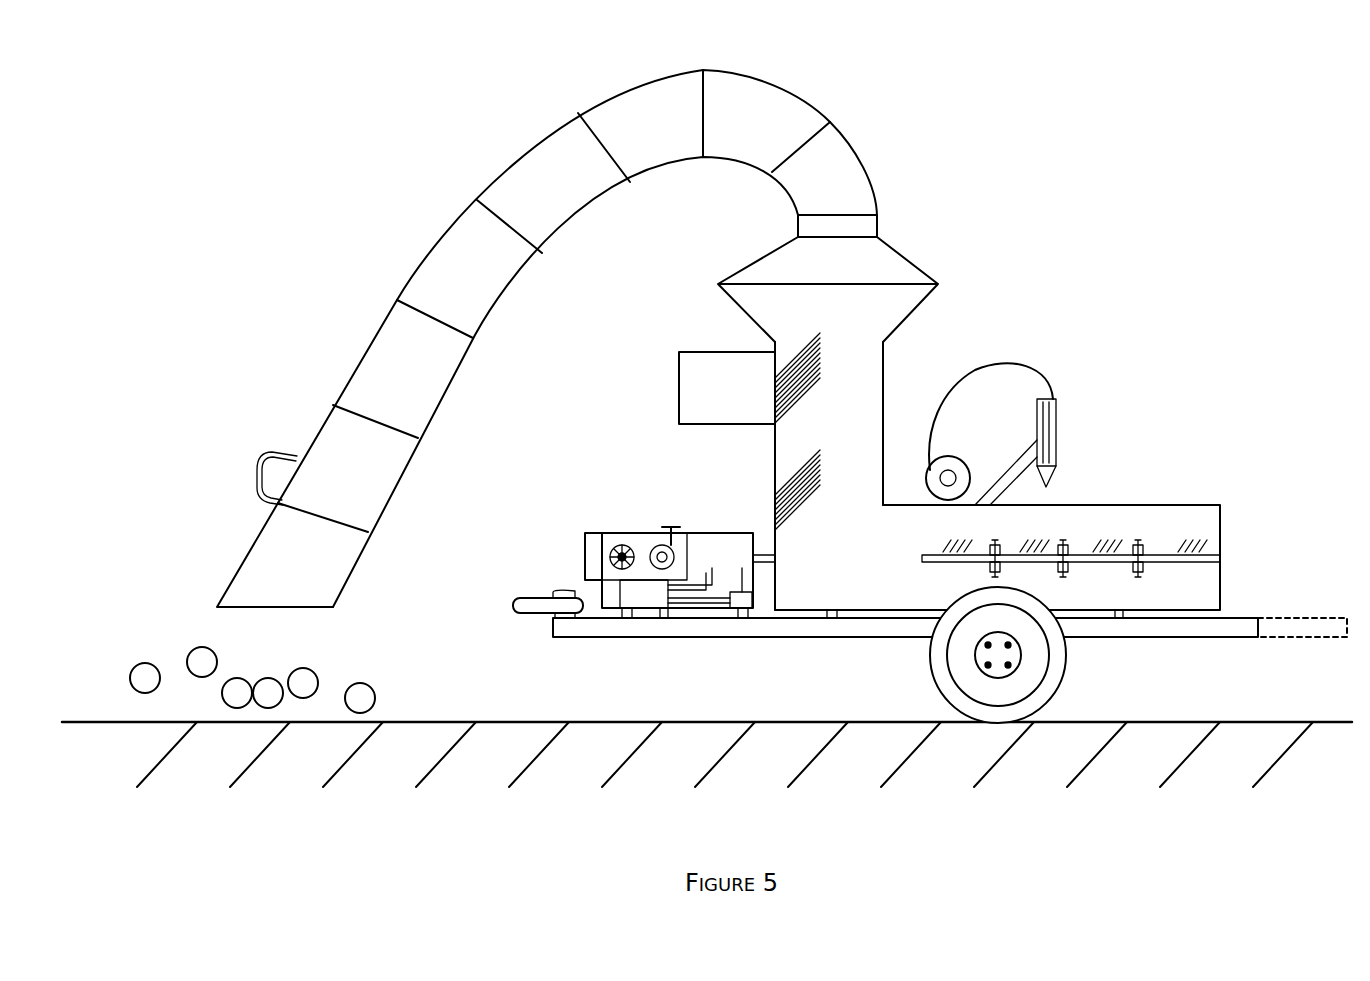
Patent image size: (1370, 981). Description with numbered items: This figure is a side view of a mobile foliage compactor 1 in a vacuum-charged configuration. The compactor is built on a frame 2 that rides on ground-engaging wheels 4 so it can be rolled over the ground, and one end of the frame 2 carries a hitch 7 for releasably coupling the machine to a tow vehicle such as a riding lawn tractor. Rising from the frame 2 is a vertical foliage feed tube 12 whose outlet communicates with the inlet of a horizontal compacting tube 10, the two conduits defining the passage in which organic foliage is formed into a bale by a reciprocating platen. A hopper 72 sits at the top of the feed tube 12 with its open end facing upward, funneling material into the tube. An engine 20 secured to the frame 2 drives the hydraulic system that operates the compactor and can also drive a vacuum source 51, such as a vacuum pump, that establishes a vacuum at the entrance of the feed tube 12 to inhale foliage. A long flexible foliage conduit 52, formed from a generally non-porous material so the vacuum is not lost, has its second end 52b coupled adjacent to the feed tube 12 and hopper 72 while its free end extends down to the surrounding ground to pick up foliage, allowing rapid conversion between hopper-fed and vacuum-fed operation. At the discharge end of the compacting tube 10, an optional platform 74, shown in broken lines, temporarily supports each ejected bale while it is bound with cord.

The foliage compactor 1 is at (899, 459).
The frame 2 is at (1247, 624).
The ground-engaging wheels 4 is at (1032, 677).
The hitch 7 is at (547, 603).
The compacting tube 10 is at (1125, 520).
The foliage feed tube 12 is at (872, 383).
The engine 20 is at (643, 547).
The vacuum source 51 is at (708, 373).
The flexible foliage conduit 52 is at (557, 162).
The second end of the foliage conduit 52b is at (876, 237).
The hopper 72 is at (740, 311).
The platform 74 is at (1305, 633).